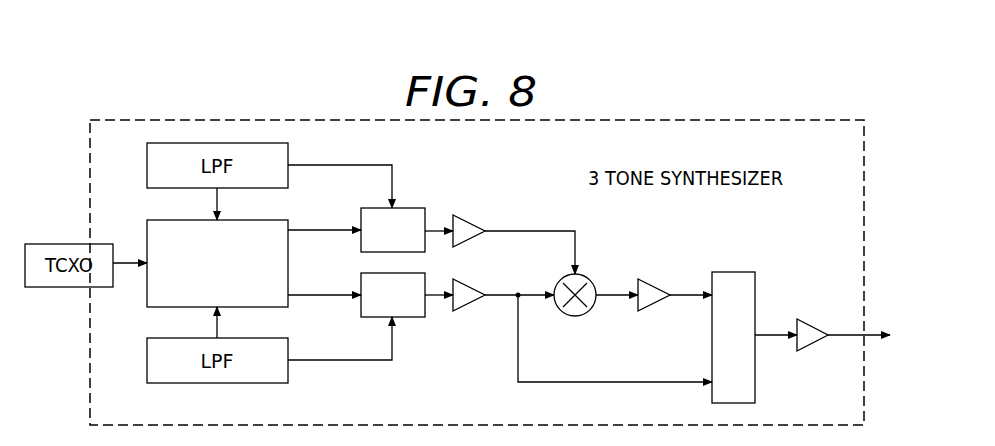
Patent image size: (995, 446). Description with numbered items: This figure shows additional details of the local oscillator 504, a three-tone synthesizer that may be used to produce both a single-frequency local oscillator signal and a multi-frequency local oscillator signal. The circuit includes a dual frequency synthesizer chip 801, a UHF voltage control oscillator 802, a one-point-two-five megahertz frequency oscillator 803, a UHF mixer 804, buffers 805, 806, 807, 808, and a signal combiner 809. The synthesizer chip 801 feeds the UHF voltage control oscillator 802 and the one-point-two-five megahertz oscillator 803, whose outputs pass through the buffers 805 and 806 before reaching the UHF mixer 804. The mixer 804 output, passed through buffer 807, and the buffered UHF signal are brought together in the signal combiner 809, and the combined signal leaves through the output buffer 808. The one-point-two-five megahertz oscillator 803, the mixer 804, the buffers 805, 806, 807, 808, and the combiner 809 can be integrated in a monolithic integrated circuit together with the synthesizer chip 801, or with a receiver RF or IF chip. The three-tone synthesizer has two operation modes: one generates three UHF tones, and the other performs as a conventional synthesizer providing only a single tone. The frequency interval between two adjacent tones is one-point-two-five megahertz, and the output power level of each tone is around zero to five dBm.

The local oscillator 504 is at (90, 194).
The dual frequency synthesizer chip 801 is at (288, 265).
The UHF voltage control oscillator 802 is at (405, 318).
The 1.25 MHz frequency oscillator 803 is at (407, 208).
The UHF mixer 804 is at (577, 318).
The buffer 805 is at (470, 218).
The buffer 806 is at (473, 312).
The buffer 807 is at (655, 283).
The buffer 808 is at (815, 320).
The signal combiner 809 is at (733, 272).